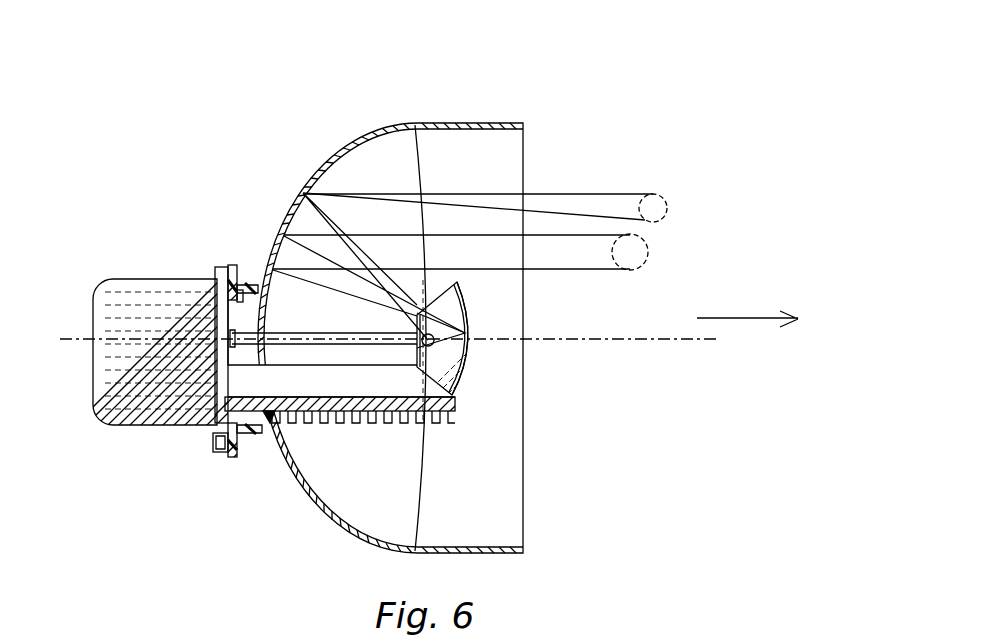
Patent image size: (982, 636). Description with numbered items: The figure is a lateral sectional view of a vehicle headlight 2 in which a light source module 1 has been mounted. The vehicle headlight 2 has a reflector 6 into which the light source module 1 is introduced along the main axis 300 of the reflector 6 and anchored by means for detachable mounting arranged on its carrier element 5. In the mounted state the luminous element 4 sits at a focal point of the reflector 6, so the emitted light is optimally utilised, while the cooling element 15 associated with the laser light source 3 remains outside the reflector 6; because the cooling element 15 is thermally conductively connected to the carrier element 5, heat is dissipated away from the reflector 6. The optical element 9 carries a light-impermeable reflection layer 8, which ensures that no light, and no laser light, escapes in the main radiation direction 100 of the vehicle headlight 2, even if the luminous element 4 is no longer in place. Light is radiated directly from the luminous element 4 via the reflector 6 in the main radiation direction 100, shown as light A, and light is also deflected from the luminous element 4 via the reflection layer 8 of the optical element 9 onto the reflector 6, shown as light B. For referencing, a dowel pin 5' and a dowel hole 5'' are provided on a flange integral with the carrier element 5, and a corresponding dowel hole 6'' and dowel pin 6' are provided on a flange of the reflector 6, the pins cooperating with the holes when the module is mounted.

The light source module 1 is at (133, 252).
The vehicle headlight 2 is at (287, 118).
The laser light source 3 is at (240, 333).
The luminous element 4 is at (470, 305).
The carrier element 5 is at (546, 293).
The dowel pin 5' is at (594, 155).
The dowel hole 5'' is at (590, 332).
The reflector 6 is at (385, 367).
The dowel pin 6' is at (207, 504).
The dowel hole 6'' is at (205, 247).
The reflection layer 8 is at (458, 367).
The optical element 9 is at (447, 357).
The cooling element 15 is at (143, 423).
The main radiation direction 100 is at (747, 309).
The main axis 300 is at (60, 336).
The directly radiated light A is at (657, 205).
The deflected light B is at (627, 248).